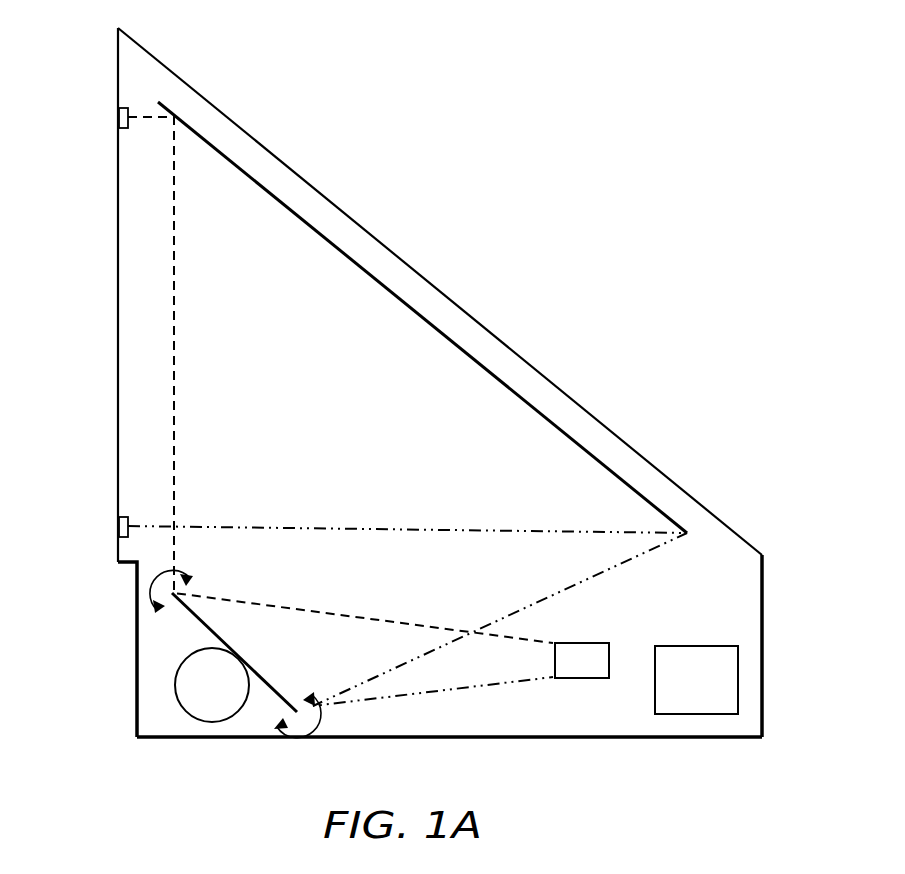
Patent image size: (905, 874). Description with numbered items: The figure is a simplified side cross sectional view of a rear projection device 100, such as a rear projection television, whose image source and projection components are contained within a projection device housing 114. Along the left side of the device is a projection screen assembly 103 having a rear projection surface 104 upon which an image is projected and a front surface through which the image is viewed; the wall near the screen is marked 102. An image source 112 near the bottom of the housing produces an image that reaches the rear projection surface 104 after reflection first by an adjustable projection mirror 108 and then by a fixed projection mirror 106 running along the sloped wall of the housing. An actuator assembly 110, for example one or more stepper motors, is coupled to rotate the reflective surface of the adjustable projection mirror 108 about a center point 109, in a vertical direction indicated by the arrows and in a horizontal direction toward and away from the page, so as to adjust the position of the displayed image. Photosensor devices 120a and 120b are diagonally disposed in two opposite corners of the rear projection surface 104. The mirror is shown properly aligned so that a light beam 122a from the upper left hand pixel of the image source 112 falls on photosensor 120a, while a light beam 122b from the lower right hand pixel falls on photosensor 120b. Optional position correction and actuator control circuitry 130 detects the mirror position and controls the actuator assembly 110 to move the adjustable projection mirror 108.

The rear projection device 100 is at (568, 175).
The front wall (screen side) 102 is at (118, 298).
The projection screen assembly 103 is at (119, 567).
The rear projection surface 104 is at (120, 72).
The fixed projection mirror 106 is at (398, 298).
The adjustable projection mirror 108 is at (239, 653).
The center point 109 is at (243, 660).
The actuator assembly 110 is at (207, 708).
The image source 112 is at (582, 667).
The projection device housing 114 is at (763, 648).
The photosensor device 120a is at (118, 116).
The photosensor device 120b is at (118, 523).
The light beam 122a is at (176, 277).
The light beam 122b is at (323, 527).
The position correction and actuator control circuitry 130 is at (703, 700).